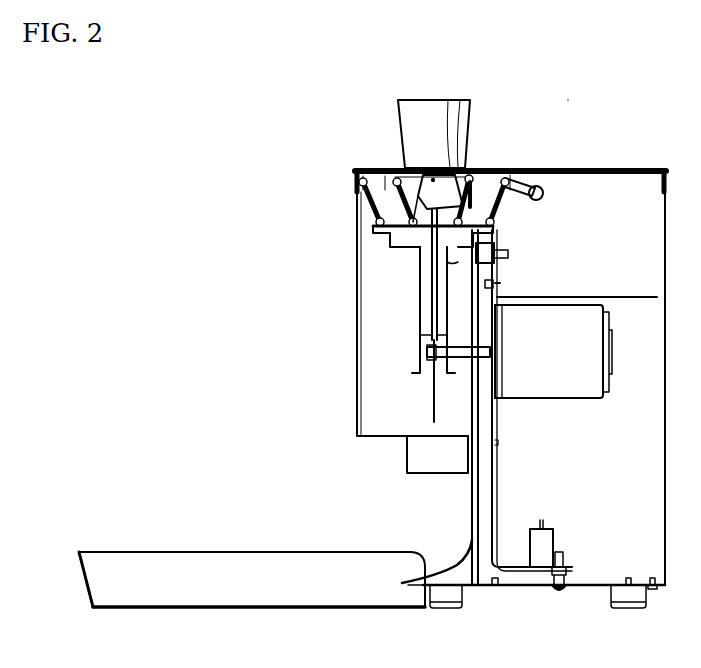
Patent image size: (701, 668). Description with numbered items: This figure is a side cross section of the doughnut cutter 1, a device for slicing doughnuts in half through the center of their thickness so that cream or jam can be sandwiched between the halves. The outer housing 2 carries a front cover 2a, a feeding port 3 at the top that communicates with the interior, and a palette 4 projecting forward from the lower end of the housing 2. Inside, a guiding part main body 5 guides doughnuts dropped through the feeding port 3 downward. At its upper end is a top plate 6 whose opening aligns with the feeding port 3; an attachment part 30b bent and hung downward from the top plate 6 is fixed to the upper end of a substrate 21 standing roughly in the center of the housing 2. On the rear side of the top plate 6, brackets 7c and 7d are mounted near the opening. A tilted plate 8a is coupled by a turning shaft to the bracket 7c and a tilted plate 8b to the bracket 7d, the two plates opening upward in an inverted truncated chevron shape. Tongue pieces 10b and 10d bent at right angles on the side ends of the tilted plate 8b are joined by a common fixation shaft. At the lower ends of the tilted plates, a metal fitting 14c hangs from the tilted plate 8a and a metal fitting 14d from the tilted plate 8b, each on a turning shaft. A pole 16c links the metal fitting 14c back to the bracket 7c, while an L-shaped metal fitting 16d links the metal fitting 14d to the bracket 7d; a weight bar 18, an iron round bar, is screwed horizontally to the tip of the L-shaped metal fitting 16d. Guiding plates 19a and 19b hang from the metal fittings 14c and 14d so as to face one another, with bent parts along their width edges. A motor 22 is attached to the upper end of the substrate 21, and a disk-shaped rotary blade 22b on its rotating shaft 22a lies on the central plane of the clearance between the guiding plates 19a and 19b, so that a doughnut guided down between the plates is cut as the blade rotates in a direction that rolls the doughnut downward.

The doughnut cutter 1 is at (578, 101).
The housing 2 is at (566, 168).
The front cover 2a is at (356, 300).
The feeding port 3 is at (478, 136).
The palette 4 is at (233, 550).
The guiding part main body 5 is at (387, 265).
The top plate 6 is at (363, 176).
The bracket 7c is at (385, 208).
The bracket 7d is at (490, 208).
The tilted plate 8a is at (424, 198).
The tilted plate 8b is at (468, 196).
The tongue piece 10b is at (415, 174).
The tongue piece 10d is at (450, 166).
The metal fitting 14c is at (388, 240).
The metal fitting 14d is at (450, 258).
The pole 16c is at (375, 198).
The L-shaped metal fitting 16d is at (512, 196).
The weight bar 18 is at (537, 190).
The guiding plate 19a is at (420, 306).
The guiding plate 19b is at (455, 307).
The substrate 21 is at (497, 447).
The motor 22 is at (546, 402).
The rotating shaft 22a is at (460, 362).
The rotary blade 22b is at (432, 392).
The attachment part 30b is at (458, 166).